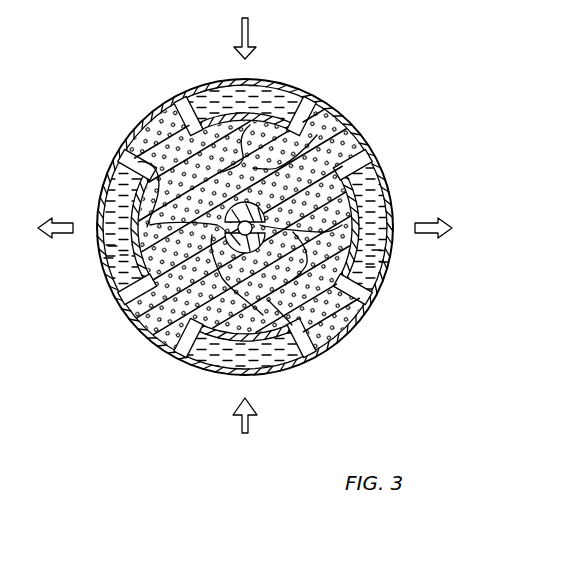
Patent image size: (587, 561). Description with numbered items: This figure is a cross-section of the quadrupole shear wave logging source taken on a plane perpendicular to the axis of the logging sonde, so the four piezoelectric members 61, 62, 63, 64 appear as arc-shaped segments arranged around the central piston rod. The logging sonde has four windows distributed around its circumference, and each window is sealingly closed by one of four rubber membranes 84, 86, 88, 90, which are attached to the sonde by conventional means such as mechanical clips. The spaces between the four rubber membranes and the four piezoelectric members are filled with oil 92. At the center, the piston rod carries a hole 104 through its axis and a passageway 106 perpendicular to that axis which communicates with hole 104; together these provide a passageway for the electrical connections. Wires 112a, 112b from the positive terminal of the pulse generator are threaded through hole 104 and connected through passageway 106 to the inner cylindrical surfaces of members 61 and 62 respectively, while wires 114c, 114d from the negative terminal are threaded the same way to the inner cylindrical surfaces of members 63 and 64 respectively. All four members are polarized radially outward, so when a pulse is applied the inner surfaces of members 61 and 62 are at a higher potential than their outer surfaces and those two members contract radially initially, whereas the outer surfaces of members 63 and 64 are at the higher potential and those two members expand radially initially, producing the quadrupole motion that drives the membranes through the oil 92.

The piezoelectric member 61 is at (208, 127).
The piezoelectric member 62 is at (285, 345).
The piezoelectric member 63 is at (150, 275).
The piezoelectric member 64 is at (355, 218).
The rubber membrane 84 is at (293, 83).
The rubber membrane 86 is at (223, 375).
The rubber membrane 88 is at (102, 190).
The rubber membrane 90 is at (395, 193).
The oil 92 is at (115, 250).
The hole 104 is at (165, 310).
The passageway 106 is at (348, 290).
The wire 112a is at (325, 170).
The wire 112b is at (315, 317).
The wire 114c is at (133, 153).
The wire 114d is at (350, 195).